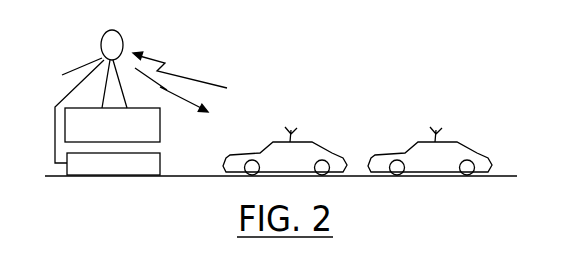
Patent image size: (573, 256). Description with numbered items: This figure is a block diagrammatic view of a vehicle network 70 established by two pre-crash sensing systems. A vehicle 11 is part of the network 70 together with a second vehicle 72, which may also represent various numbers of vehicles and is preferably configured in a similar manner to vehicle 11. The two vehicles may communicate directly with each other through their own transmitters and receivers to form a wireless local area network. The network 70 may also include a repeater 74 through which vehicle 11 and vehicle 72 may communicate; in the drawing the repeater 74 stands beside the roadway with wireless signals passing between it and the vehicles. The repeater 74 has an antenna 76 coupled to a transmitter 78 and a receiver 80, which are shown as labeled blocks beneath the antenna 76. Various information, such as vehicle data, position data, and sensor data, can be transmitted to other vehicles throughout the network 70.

The network 70 is at (284, 60).
The antenna 76 is at (100, 43).
The repeater 74 is at (65, 76).
The transmitter 78 is at (162, 127).
The receiver 80 is at (162, 165).
The vehicle 11 is at (315, 142).
The second vehicle 72 is at (460, 142).